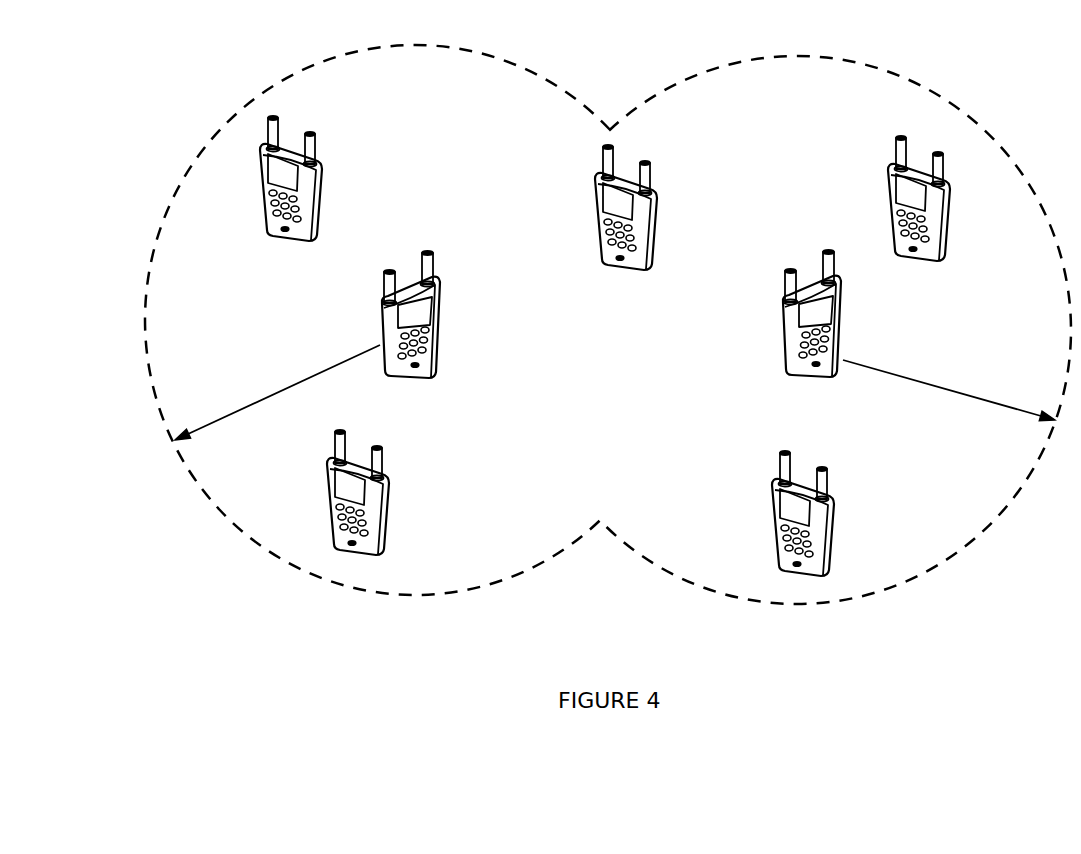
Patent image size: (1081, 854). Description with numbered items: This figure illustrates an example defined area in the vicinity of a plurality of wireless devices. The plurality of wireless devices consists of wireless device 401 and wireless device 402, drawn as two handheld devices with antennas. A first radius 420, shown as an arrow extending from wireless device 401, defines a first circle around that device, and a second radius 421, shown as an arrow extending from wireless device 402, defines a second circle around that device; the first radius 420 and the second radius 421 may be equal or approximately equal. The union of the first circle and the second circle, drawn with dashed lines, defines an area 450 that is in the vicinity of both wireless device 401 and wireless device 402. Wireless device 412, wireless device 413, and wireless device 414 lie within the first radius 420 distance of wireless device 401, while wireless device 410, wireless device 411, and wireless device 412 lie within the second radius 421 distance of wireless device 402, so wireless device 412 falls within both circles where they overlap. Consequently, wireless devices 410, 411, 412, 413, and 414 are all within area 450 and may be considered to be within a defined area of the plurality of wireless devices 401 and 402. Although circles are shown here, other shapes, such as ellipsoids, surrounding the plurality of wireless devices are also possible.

The wireless device 401 is at (386, 376).
The wireless device 402 is at (791, 377).
The wireless device 410 is at (778, 560).
The wireless device 411 is at (938, 262).
The wireless device 412 is at (636, 272).
The wireless device 413 is at (291, 243).
The wireless device 414 is at (328, 523).
The first radius 420 is at (293, 385).
The second radius 421 is at (948, 389).
The area 450 is at (388, 596).